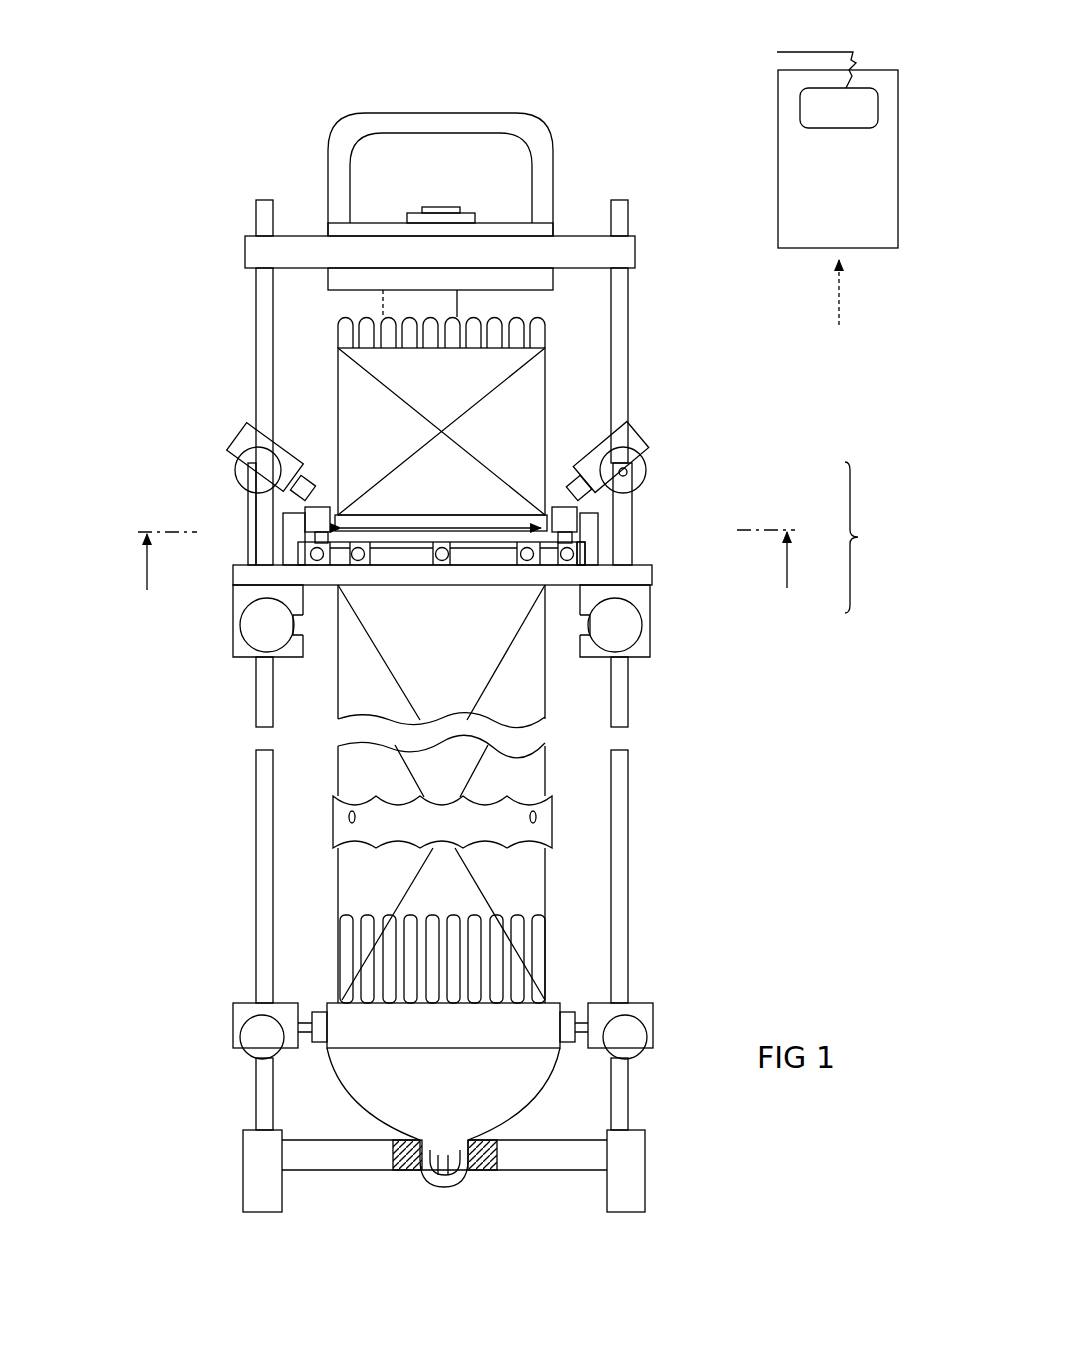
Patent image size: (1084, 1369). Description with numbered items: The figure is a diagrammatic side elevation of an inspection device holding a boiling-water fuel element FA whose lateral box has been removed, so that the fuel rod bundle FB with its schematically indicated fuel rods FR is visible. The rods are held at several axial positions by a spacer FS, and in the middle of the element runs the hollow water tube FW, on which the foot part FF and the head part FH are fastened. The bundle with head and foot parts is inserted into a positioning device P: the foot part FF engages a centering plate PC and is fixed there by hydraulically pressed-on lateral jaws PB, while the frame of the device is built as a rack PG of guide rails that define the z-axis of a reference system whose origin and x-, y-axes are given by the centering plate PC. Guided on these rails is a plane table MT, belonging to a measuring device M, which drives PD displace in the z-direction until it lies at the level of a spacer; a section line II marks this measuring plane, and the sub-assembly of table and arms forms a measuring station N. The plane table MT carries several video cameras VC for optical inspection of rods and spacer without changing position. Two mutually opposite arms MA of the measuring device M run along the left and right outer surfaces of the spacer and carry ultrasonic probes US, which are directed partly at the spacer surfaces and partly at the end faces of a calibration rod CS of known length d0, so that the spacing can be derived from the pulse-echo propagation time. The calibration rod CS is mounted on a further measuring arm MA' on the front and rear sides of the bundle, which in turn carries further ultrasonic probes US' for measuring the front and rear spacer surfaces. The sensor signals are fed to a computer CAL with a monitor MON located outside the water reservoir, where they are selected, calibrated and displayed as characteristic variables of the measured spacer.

The fuel element FA is at (562, 190).
The head part FH is at (335, 228).
The positioning device P is at (648, 247).
The water tube FW is at (395, 305).
The fuel rod bundle FB is at (558, 718).
The calibration rod CS is at (332, 520).
The known length of the calibration rod d0 is at (443, 525).
The video camera VC is at (247, 442).
The ultrasonic probes US is at (441, 498).
The measuring arms MA is at (446, 526).
The ultrasonic probes of the further measuring arm US' is at (510, 542).
The further measuring arm MA' is at (652, 559).
The plane table MT is at (643, 575).
The nest N is at (443, 576).
The section line II is at (465, 560).
The measuring device M is at (858, 537).
The drives PD is at (636, 628).
The rack of guide rails PG is at (628, 822).
The spacer FS is at (338, 822).
The fuel rods FR is at (542, 942).
The lateral jaws PB is at (318, 1040).
The foot part FF is at (510, 1097).
The centering plate PC is at (365, 1160).
The monitor MON is at (807, 108).
The computer CAL is at (797, 238).